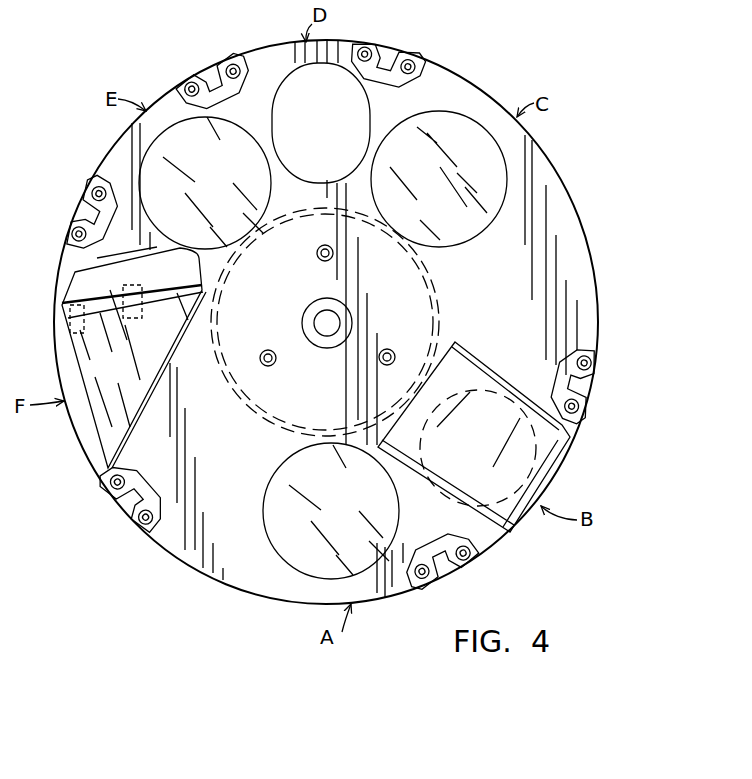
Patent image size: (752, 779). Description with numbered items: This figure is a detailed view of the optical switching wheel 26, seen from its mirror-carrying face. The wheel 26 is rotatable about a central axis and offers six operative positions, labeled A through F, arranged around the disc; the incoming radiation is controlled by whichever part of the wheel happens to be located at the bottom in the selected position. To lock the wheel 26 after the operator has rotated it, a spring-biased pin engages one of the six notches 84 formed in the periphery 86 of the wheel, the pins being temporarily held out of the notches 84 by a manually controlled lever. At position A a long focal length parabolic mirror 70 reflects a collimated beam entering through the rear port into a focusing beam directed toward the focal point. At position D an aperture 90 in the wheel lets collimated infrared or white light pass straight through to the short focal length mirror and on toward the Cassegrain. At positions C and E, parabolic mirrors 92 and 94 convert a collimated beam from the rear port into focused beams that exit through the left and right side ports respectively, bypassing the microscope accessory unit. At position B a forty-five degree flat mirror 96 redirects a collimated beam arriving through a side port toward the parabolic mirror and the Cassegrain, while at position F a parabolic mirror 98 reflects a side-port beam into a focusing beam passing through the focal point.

The mirror-carrying wheel 26 is at (359, 322).
The long focal length parabolic mirror 70 is at (313, 556).
The notches 84 is at (207, 78).
The periphery 86 is at (585, 232).
The aperture 90 is at (352, 120).
The parabolic mirror 92 is at (487, 193).
The parabolic mirror 94 is at (157, 183).
The 45° flat mirror 96 is at (527, 471).
The parabolic mirror 98 is at (110, 432).